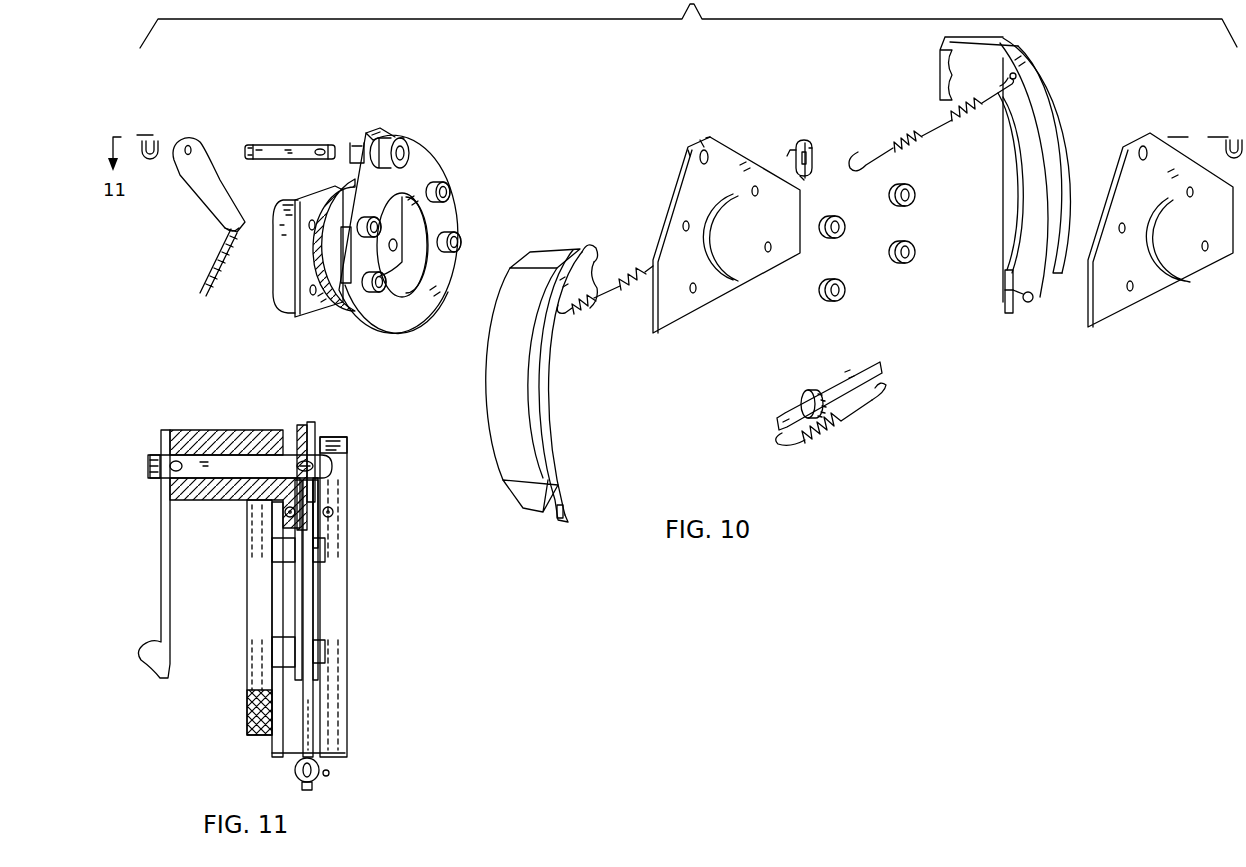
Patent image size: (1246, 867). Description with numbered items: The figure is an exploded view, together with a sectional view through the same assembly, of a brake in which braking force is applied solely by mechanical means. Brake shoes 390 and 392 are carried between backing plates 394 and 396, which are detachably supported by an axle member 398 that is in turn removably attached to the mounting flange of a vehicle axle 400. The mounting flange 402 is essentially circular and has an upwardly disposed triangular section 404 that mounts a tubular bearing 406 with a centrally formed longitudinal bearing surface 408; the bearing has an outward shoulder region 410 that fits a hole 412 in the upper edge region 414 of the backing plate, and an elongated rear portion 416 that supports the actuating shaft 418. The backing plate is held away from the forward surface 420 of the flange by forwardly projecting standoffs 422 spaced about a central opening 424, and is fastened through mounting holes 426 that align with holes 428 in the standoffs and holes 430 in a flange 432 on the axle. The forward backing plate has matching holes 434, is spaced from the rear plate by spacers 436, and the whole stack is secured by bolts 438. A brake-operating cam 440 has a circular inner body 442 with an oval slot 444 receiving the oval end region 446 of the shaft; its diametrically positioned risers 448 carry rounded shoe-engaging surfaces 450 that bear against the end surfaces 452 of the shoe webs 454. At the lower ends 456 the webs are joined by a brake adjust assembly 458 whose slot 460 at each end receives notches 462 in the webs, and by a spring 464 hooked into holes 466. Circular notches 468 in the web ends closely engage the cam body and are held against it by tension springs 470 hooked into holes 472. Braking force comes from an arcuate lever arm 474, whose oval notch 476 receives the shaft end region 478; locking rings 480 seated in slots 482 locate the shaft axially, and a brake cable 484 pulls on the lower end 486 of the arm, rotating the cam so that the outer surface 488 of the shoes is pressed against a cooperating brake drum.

In FIG. 10, the brake shoe 390 is at (500, 466).
In FIG. 10, the brake shoe 392 is at (1056, 115).
In FIG. 11, the brake shoe 392 is at (347, 603).
In FIG. 10, the forward backing plate 394 is at (1101, 316).
In FIG. 11, the forward backing plate 394 is at (313, 426).
In FIG. 10, the backing plate 396 is at (668, 319).
In FIG. 11, the backing plate 396 is at (300, 428).
In FIG. 10, the axle member 398 is at (340, 305).
In FIG. 10, the vehicle axle 400 is at (280, 254).
In FIG. 10, the mounting flange 402 is at (435, 329).
In FIG. 11, the mounting flange 402 is at (240, 710).
In FIG. 10, the triangular section 404 is at (427, 178).
In FIG. 10, the tubular bearing 406 is at (374, 144).
In FIG. 11, the tubular bearing 406 is at (248, 440).
In FIG. 10, the longitudinal bearing surface 408 is at (405, 155).
In FIG. 10, the outward shoulder region 410 is at (401, 148).
In FIG. 10, the hole 412 is at (708, 138).
In FIG. 10, the upper edge region 414 is at (688, 160).
In FIG. 10, the elongated rear portion 416 is at (355, 142).
In FIG. 10, the actuating shaft 418 is at (300, 145).
In FIG. 11, the actuating shaft 418 is at (193, 438).
In FIG. 10, the forward surface 420 is at (457, 221).
In FIG. 10, the standoffs 422 is at (452, 192).
In FIG. 11, the standoffs 422 is at (265, 648).
In FIG. 10, the central opening 424 is at (429, 264).
In FIG. 11, the central opening 424 is at (258, 592).
In FIG. 10, the mounting holes 426 is at (757, 195).
In FIG. 10, the holes 428 is at (454, 241).
In FIG. 10, the holes 430 is at (306, 300).
In FIG. 10, the flange 432 is at (310, 313).
In FIG. 10, the holes 434 is at (1192, 195).
In FIG. 10, the spacers 436 is at (900, 210).
In FIG. 11, the spacers 436 is at (320, 655).
In FIG. 11, the bolts 438 is at (330, 555).
In FIG. 10, the brake-operating cam 440 is at (804, 140).
In FIG. 11, the brake-operating cam 440 is at (320, 493).
In FIG. 10, the circular inner body 442 is at (813, 150).
In FIG. 10, the oval slot 444 is at (811, 160).
In FIG. 10, the end region 446 is at (319, 159).
In FIG. 10, the risers 448 is at (794, 148).
In FIG. 10, the shoe-engaging surfaces 450 is at (804, 175).
In FIG. 10, the end surfaces 452 is at (588, 258).
In FIG. 10, the webs 454 is at (540, 396).
In FIG. 11, the webs 454 is at (310, 705).
In FIG. 10, the lower ends 456 is at (566, 512).
In FIG. 10, the brake adjust assembly 458 is at (832, 376).
In FIG. 11, the brake adjust assembly 458 is at (296, 785).
In FIG. 10, the slot 460 is at (868, 368).
In FIG. 10, the notches 462 is at (1008, 290).
In FIG. 10, the spring 464 is at (823, 432).
In FIG. 11, the spring 464 is at (329, 773).
In FIG. 10, the holes 466 is at (1031, 301).
In FIG. 10, the circular notches 468 is at (596, 250).
In FIG. 10, the tension springs 470 is at (912, 141).
In FIG. 11, the tension springs 470 is at (336, 515).
In FIG. 10, the holes 472 is at (1020, 75).
In FIG. 10, the lever arm 474 is at (200, 143).
In FIG. 11, the lever arm 474 is at (161, 535).
In FIG. 10, the oval notch 476 is at (189, 160).
In FIG. 10, the end region 478 is at (264, 159).
In FIG. 10, the locking rings 480 is at (165, 157).
In FIG. 11, the locking rings 480 is at (158, 452).
In FIG. 10, the slots 482 is at (252, 145).
In FIG. 10, the brake cable 484 is at (212, 239).
In FIG. 10, the lower end 486 is at (234, 228).
In FIG. 10, the outer surface 488 is at (494, 363).